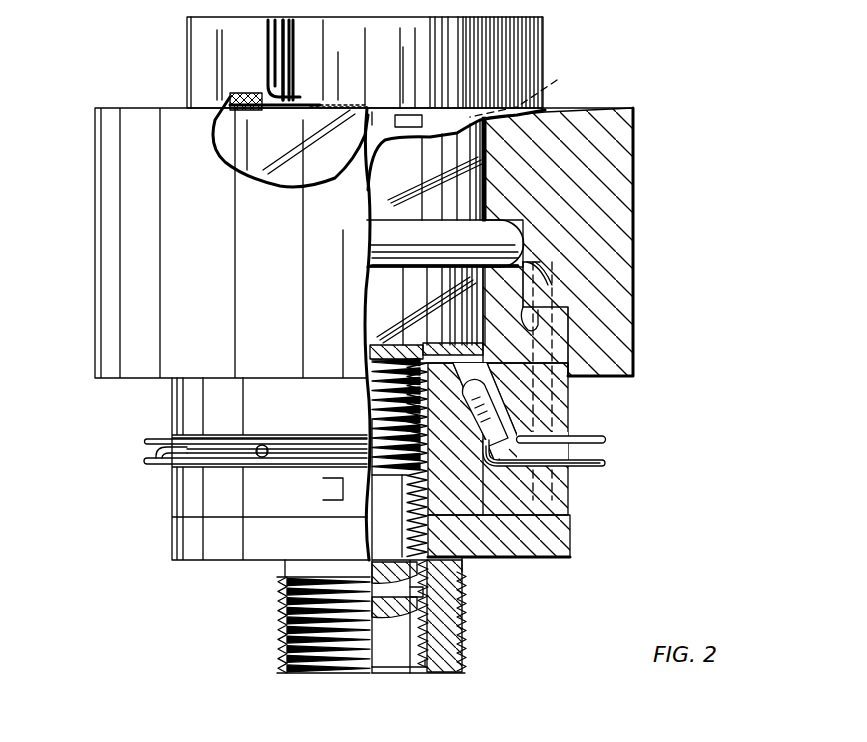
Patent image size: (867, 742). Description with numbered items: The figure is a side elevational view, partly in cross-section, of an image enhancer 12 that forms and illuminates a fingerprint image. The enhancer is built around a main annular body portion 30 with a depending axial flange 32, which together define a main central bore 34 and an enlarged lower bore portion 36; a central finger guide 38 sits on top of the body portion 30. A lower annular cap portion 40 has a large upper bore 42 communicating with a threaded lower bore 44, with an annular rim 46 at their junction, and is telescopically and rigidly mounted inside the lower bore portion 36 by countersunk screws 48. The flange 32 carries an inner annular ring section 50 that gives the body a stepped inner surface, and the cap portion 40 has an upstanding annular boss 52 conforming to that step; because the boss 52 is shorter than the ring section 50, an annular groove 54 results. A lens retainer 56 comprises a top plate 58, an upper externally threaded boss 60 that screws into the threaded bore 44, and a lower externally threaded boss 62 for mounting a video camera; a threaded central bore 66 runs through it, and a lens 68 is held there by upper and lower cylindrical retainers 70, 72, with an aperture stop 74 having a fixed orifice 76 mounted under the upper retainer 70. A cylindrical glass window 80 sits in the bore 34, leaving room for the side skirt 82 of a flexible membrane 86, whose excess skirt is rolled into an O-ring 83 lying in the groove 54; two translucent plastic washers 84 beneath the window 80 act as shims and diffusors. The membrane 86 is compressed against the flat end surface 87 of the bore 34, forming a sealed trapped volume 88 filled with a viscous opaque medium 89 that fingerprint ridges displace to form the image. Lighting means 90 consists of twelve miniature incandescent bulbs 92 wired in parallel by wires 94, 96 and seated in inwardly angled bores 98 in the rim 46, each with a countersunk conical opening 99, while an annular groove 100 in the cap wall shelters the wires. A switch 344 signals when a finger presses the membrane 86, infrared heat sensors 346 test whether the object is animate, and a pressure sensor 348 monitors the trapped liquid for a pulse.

The image enhancer 12 is at (666, 94).
The main annular body portion 30 is at (636, 229).
The depending axial flange 32 is at (632, 378).
The main central bore 34 is at (528, 92).
The enlarged lower bore portion 36 is at (523, 225).
The central guide 38 is at (543, 48).
The lower annular cap portion 40 is at (173, 507).
The large upper bore 42 is at (488, 260).
The threaded lower bore 44 is at (380, 380).
The annular rim 46 is at (365, 343).
The countersunk screws 48 is at (573, 497).
The inner annular ring section 50 is at (538, 320).
The upstanding annular boss 52 is at (498, 300).
The annular groove 54 is at (530, 258).
The lens retainer 56 is at (230, 598).
The top plate 58 is at (572, 545).
The upper externally threaded annular boss 60 is at (428, 440).
The lower externally threaded annular boss 62 is at (463, 628).
The threaded central bore 66 is at (367, 423).
The lens 68 is at (458, 582).
The upper cylindrical retainer 70 is at (343, 488).
The lower cylindrical retainer 72 is at (418, 673).
The aperture stop 74 is at (395, 575).
The orifice 76 is at (380, 550).
The cylindrical glass window 80 is at (405, 202).
The side skirt 82 is at (483, 187).
The O-ring 83 is at (493, 244).
The translucent annular plastic washers 84 is at (457, 337).
The flexible membrane 86 is at (402, 61).
The wall 87 is at (483, 143).
The trapped volume 88 is at (383, 116).
The viscous opaque medium 89 is at (298, 68).
The artificial lighting means 90 is at (132, 452).
The miniature incandescent light bulbs 92 is at (604, 437).
The wire 94 is at (167, 438).
The wire 96 is at (168, 467).
The bores 98 is at (380, 355).
The countersunk conical upper opening 99 is at (490, 402).
The annular groove 100 is at (213, 448).
The switch 344 is at (232, 112).
The infrared heat sensors 346 is at (258, 38).
The pressure sensor 348 is at (395, 116).